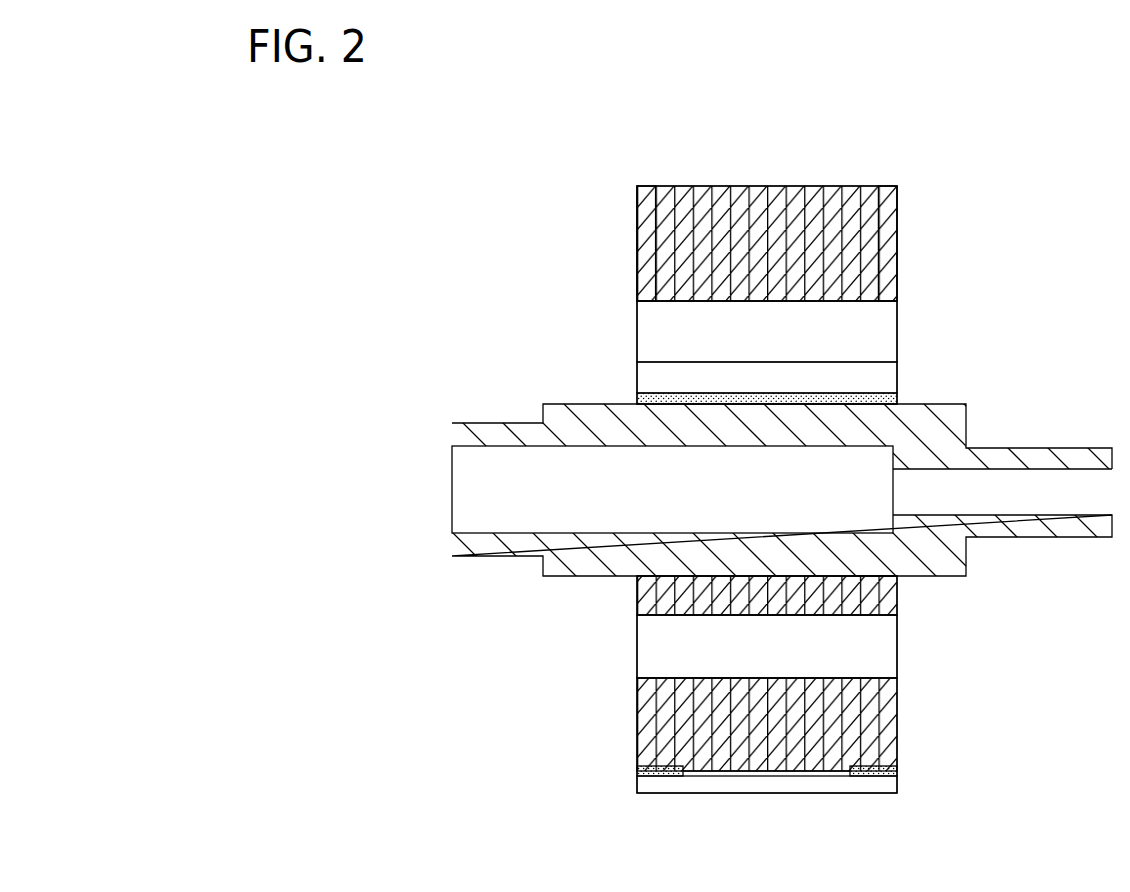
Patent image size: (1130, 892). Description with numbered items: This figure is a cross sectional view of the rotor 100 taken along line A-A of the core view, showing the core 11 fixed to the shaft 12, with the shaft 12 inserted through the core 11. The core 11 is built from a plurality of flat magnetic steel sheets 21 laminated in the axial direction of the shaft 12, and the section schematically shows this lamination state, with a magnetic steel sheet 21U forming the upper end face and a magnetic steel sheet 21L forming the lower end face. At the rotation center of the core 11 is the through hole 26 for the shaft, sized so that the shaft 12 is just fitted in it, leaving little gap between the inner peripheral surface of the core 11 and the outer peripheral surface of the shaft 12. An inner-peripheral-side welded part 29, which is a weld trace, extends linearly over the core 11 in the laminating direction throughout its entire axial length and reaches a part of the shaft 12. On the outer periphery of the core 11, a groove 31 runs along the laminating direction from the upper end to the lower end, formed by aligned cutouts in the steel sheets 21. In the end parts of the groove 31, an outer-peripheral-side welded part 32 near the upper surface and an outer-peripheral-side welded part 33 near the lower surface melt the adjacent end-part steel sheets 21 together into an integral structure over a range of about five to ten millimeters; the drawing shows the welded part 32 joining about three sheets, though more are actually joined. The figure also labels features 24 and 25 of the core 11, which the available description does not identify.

The rotor 100 is at (890, 157).
The core 11 is at (898, 238).
The shaft 12 is at (950, 430).
The magnetic steel sheets 21 is at (737, 186).
The magnetic steel sheet forming a lower end face 21L is at (643, 186).
The magnetic steel sheet forming an upper end face 21U is at (883, 186).
The insulating layer 24 is at (683, 303).
The back yoke 25 is at (685, 362).
The through hole for shaft 26 is at (876, 577).
The inner-peripheral-side welded part 29 is at (898, 397).
The groove 31 is at (807, 783).
The outer-peripheral-side welded part 32 is at (878, 777).
The outer-peripheral-side welded part 33 is at (657, 777).